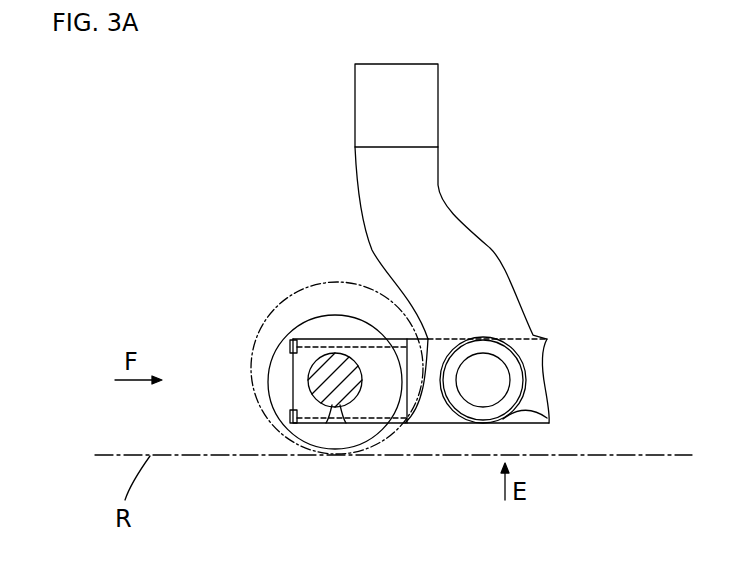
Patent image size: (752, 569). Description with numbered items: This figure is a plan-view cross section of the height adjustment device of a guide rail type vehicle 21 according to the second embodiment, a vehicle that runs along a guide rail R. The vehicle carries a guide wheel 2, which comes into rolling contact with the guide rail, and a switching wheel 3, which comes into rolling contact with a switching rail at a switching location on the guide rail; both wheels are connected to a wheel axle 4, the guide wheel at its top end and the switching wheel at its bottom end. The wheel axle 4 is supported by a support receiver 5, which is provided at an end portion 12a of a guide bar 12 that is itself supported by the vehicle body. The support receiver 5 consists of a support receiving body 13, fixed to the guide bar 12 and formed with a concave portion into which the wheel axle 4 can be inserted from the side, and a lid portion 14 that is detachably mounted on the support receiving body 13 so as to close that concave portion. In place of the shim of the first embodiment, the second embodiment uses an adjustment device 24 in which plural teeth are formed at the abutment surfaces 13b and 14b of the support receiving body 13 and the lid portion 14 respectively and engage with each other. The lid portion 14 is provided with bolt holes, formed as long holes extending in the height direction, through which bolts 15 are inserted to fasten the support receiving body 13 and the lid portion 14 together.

The guide rail type vehicle 21 is at (520, 160).
The guide wheel 2 is at (315, 284).
The switching wheel 3 is at (298, 440).
The support receiving body 13 is at (370, 338).
The guide bar 12 is at (548, 427).
The end portion 12a is at (420, 417).
The support receiver 5 is at (396, 329).
The adjustment device 24 is at (327, 320).
The bolt 15 is at (292, 341).
The abutment surface 13b is at (292, 347).
The lid portion 14 is at (293, 390).
The abutment surface 14b is at (340, 353).
The wheel axle 4 is at (357, 393).